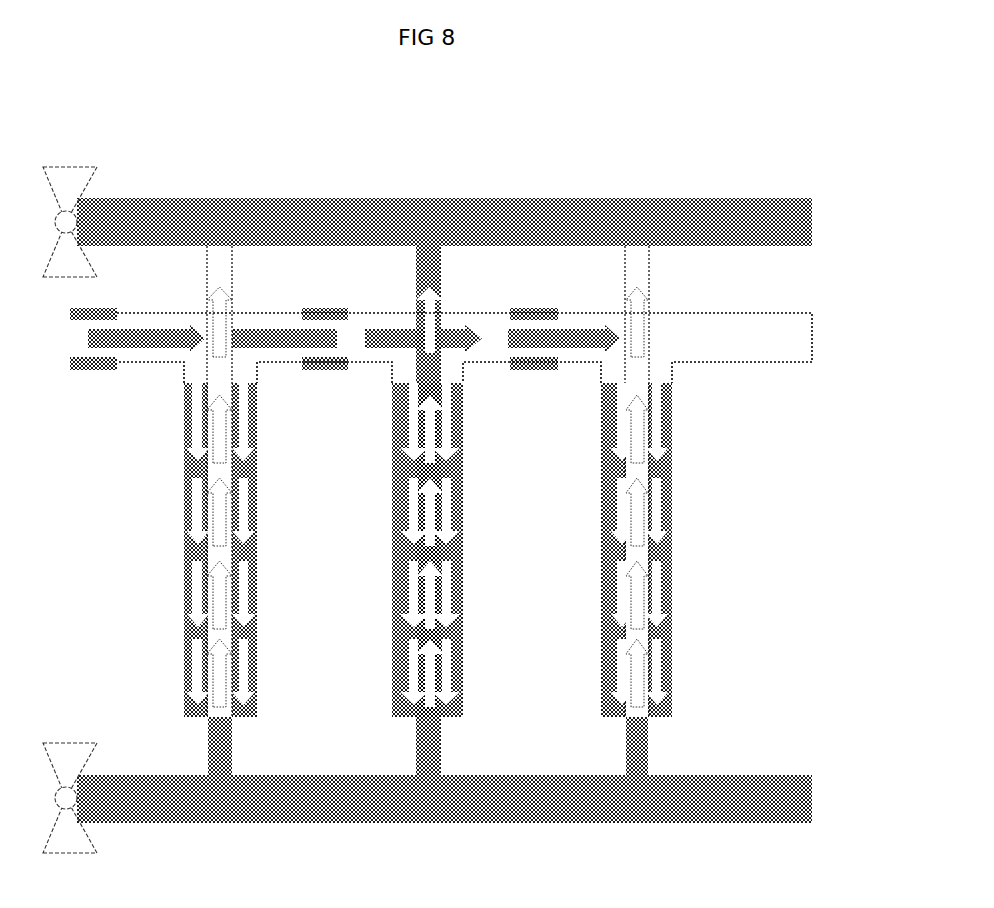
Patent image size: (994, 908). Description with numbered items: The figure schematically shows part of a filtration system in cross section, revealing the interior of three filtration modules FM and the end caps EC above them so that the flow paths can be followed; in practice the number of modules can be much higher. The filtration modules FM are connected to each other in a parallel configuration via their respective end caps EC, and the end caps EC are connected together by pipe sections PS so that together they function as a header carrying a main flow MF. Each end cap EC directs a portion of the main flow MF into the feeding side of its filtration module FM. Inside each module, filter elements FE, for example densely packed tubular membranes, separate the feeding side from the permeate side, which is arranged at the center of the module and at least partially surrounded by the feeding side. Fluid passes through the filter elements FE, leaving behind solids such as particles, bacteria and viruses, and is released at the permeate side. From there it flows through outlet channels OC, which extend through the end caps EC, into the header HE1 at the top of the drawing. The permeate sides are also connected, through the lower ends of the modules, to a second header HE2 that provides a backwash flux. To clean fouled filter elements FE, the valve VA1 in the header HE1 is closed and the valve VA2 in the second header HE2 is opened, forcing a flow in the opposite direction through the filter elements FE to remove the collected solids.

The valve VA1 is at (88, 166).
The header HE1 is at (296, 196).
The end cap EC is at (155, 312).
The outlet channel OC is at (412, 275).
The main flow MF is at (337, 337).
The pipe section PS is at (95, 370).
The filter element FE is at (417, 465).
The filtration module FM is at (183, 530).
The valve VA2 is at (80, 741).
The second header HE2 is at (454, 826).